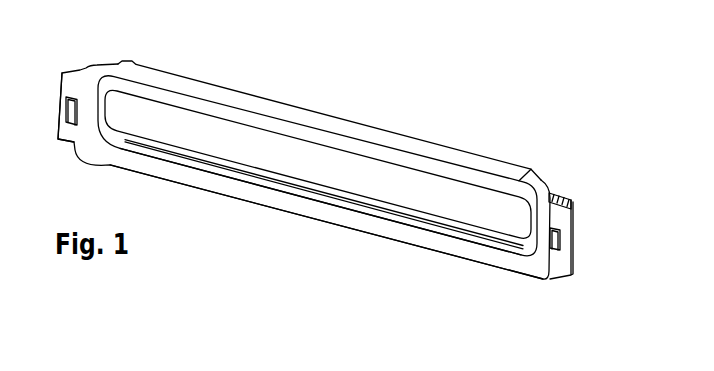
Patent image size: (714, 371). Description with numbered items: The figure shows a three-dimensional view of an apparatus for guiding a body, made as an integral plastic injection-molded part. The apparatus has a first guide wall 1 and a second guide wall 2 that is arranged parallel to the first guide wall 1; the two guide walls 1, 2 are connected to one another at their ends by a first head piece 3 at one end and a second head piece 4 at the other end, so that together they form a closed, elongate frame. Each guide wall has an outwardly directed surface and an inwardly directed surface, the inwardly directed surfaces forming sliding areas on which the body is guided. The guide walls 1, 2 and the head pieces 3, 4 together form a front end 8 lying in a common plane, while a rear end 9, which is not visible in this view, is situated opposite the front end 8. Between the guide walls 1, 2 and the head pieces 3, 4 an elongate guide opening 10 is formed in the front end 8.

The first guide wall 1 is at (357, 143).
The second guide wall 2 is at (332, 216).
The first head piece 3 is at (87, 67).
The second head piece 4 is at (562, 194).
The front end 8 is at (483, 258).
The rear end 9 is at (478, 153).
The guide opening 10 is at (220, 138).